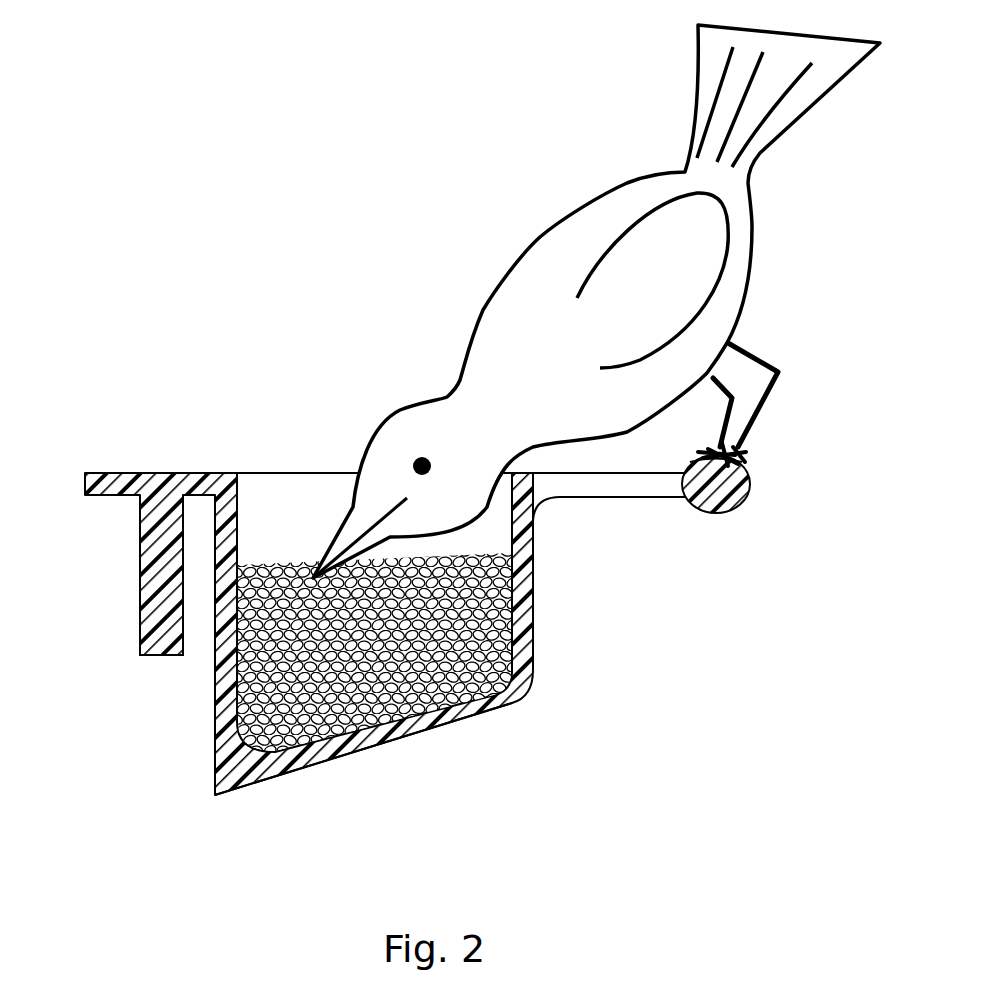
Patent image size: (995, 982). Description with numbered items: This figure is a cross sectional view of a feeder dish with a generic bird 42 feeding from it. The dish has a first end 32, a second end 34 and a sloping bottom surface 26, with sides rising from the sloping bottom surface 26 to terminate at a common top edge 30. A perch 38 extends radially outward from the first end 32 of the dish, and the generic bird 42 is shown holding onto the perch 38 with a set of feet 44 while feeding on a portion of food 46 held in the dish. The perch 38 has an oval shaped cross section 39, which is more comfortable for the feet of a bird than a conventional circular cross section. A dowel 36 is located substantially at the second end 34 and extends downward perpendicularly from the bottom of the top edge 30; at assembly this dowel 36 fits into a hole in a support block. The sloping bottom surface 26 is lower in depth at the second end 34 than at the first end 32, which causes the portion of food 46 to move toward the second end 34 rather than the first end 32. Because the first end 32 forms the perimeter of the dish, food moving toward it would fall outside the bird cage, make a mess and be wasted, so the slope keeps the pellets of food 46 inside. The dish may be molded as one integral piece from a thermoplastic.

The sloping bottom surface 26 is at (520, 698).
The top edge 30 is at (183, 474).
The first end 32 is at (750, 490).
The second end 34 is at (127, 600).
The dowel 36 is at (140, 647).
The perch 38 is at (733, 497).
The oval shaped cross section 39 is at (740, 465).
The generic bird 42 is at (582, 200).
The set of feet 44 is at (738, 447).
The portion of food 46 is at (377, 752).